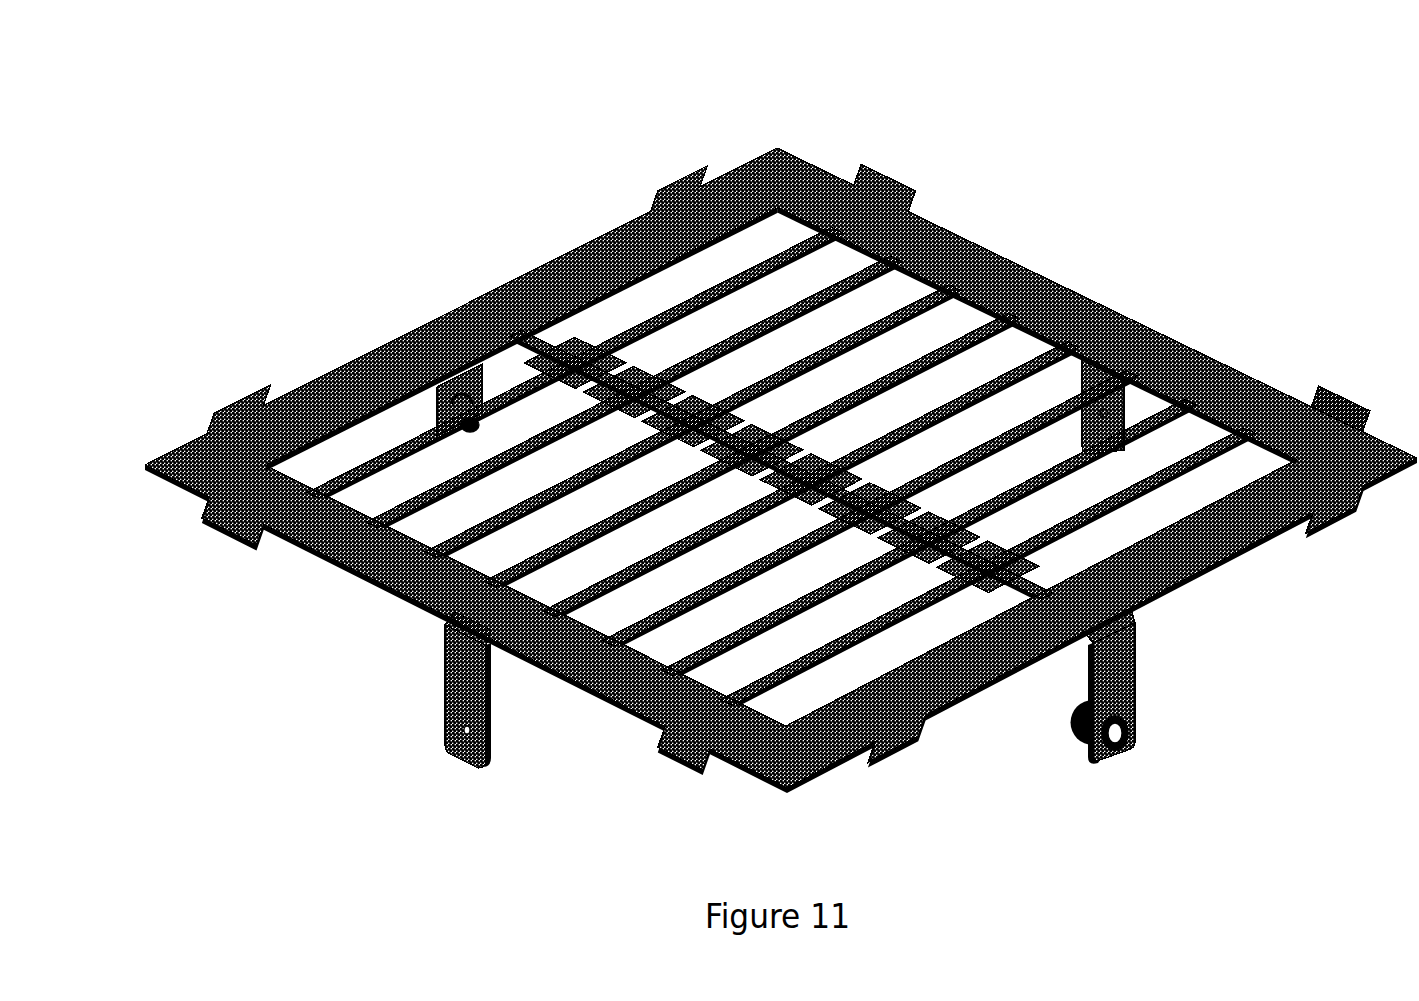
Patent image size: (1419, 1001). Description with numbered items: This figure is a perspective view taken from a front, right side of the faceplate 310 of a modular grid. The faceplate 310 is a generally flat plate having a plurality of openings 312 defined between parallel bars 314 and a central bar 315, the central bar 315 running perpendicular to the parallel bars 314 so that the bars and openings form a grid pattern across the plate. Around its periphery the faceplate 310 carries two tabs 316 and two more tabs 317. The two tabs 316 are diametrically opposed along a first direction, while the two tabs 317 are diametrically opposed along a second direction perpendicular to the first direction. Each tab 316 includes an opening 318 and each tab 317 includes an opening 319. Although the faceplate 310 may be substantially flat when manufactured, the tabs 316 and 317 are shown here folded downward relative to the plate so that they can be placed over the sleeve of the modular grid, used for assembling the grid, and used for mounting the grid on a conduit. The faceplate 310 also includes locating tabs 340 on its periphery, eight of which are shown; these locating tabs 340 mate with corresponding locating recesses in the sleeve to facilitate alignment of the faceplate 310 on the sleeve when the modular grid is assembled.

The faceplate 310 is at (222, 113).
The openings 312 is at (730, 267).
The parallel bars 314 is at (905, 322).
The central bar 315 is at (603, 383).
The tabs 316 is at (1192, 688).
The tabs 317 is at (384, 690).
The opening 318 is at (1127, 738).
The opening 319 is at (468, 729).
The locating tabs 340 is at (1343, 425).